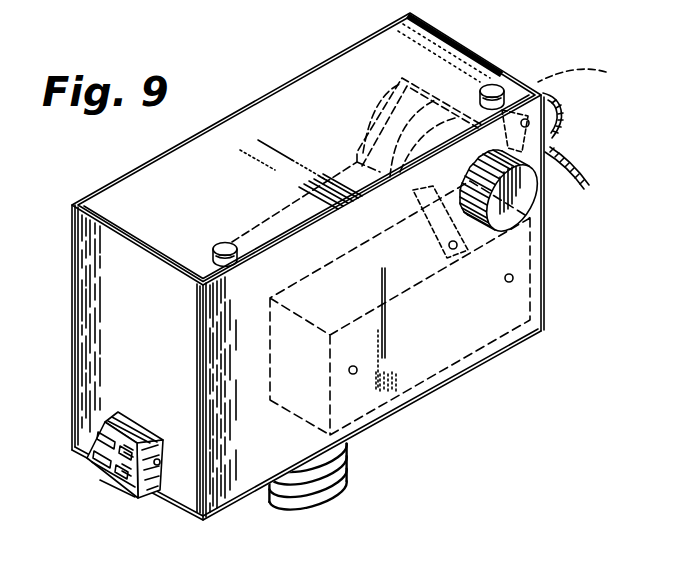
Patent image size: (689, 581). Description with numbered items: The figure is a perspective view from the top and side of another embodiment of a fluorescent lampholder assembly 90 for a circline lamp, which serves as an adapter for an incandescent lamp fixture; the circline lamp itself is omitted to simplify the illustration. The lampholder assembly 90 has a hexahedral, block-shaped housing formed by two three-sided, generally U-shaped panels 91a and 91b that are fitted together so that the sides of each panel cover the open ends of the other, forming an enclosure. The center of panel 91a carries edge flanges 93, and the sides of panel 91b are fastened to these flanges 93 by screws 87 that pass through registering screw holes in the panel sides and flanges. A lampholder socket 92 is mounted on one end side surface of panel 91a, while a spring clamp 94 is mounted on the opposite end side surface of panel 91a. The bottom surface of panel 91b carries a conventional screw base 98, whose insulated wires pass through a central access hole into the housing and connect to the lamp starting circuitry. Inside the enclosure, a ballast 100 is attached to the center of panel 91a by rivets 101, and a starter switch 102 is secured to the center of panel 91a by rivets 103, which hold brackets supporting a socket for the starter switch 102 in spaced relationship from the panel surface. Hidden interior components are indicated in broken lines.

The lampholder assembly 90 is at (531, 62).
The panel 91a is at (535, 237).
The panel 91b is at (464, 37).
The screw 87 is at (484, 91).
The lampholder socket 92 is at (138, 498).
The edge flange 93 is at (586, 74).
The spring clamp 94 is at (558, 118).
The screw base 98 is at (348, 475).
The ballast 100 is at (375, 306).
The rivet 101 is at (515, 279).
The starter switch 102 is at (529, 198).
The rivet 103 is at (543, 133).